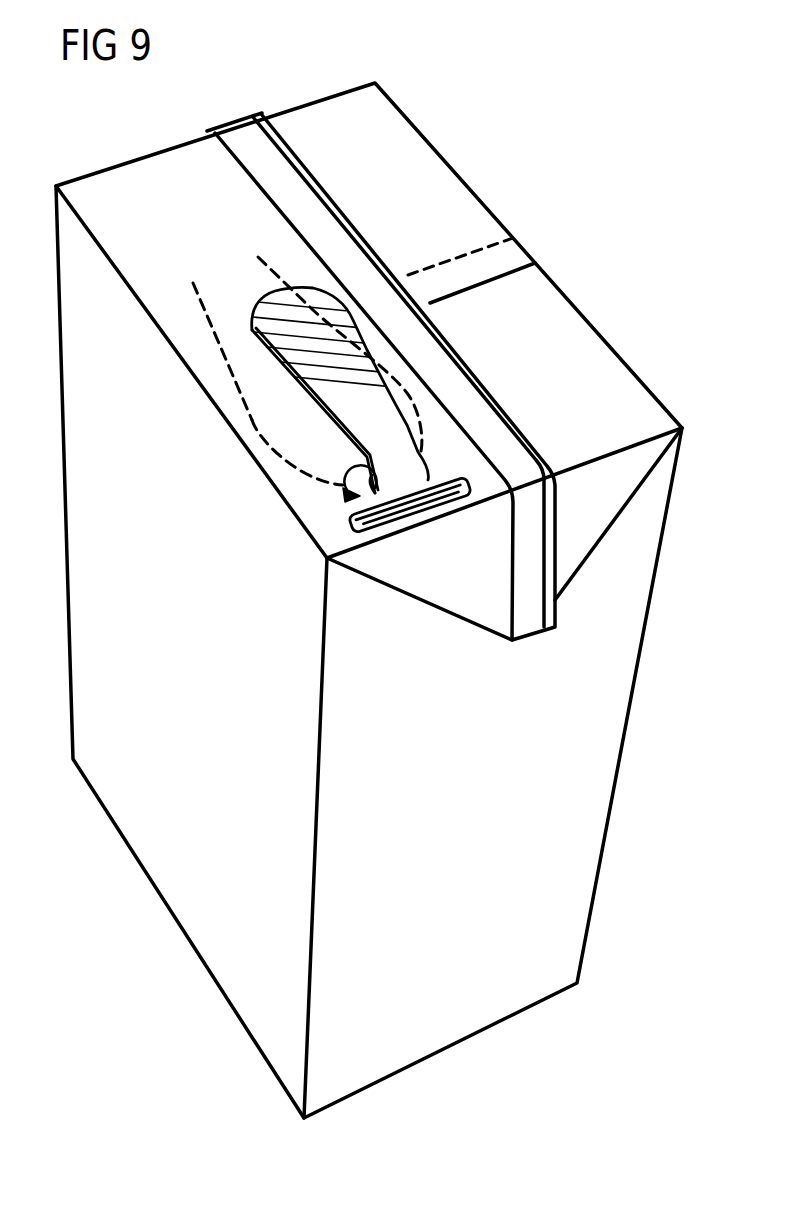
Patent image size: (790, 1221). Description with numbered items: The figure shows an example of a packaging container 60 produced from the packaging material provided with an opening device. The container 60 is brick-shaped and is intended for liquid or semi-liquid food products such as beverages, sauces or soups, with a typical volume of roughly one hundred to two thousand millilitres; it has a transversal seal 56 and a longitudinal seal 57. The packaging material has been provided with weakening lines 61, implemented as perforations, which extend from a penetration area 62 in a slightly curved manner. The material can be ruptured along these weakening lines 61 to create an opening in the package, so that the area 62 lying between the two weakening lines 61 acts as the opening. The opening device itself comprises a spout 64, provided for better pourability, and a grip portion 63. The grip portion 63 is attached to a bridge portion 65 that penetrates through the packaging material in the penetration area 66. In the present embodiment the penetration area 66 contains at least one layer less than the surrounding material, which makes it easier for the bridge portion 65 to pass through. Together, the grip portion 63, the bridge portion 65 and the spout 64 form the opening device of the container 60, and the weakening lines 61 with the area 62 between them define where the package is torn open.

The transversal seal 56 is at (510, 440).
The longitudinal seal 57 is at (460, 278).
The packaging container 60 is at (578, 843).
The weakening lines 61 is at (208, 303).
The penetration area 62 is at (282, 424).
The grip portion 63 is at (285, 318).
The spout 64 is at (417, 503).
The bridge portion 65 is at (335, 473).
The penetration area 66 is at (342, 496).